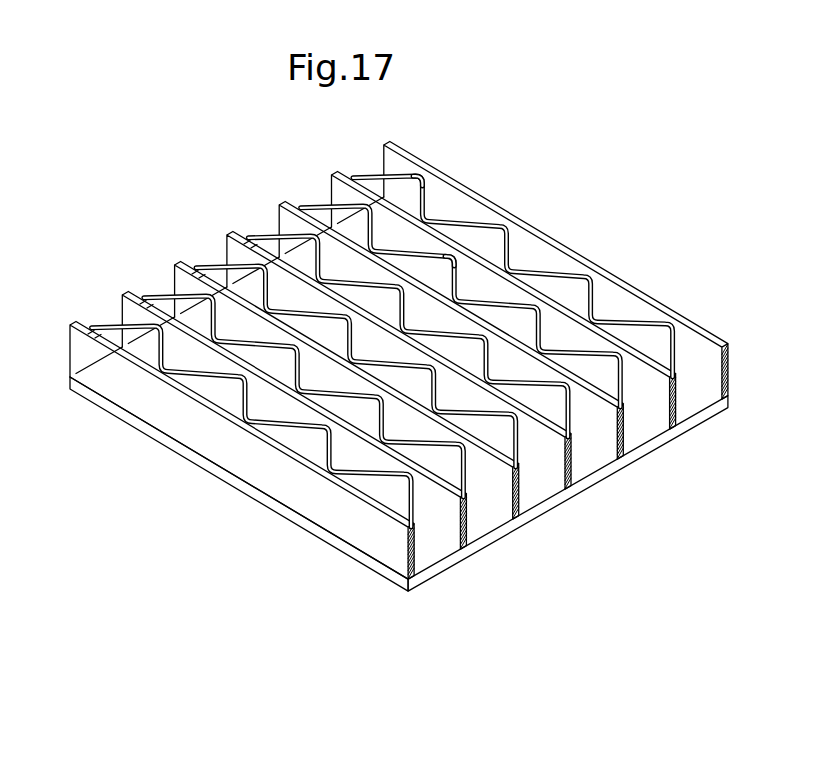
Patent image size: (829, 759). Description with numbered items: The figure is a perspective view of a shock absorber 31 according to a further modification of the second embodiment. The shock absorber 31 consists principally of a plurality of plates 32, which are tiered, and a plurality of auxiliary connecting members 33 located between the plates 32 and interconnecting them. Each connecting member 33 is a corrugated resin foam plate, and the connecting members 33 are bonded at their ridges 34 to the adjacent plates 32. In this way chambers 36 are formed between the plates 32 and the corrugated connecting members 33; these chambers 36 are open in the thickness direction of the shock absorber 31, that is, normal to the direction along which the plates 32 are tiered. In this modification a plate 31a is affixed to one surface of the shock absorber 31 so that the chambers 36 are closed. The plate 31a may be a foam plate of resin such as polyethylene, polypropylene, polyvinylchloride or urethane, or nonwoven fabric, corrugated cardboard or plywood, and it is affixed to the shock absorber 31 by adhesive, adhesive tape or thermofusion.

The shock absorber 31 is at (399, 368).
The plate 31a is at (368, 553).
The plates 32 is at (698, 366).
The auxiliary connecting members 33 is at (110, 325).
The ridges 34 is at (420, 178).
The chambers 36 is at (605, 355).